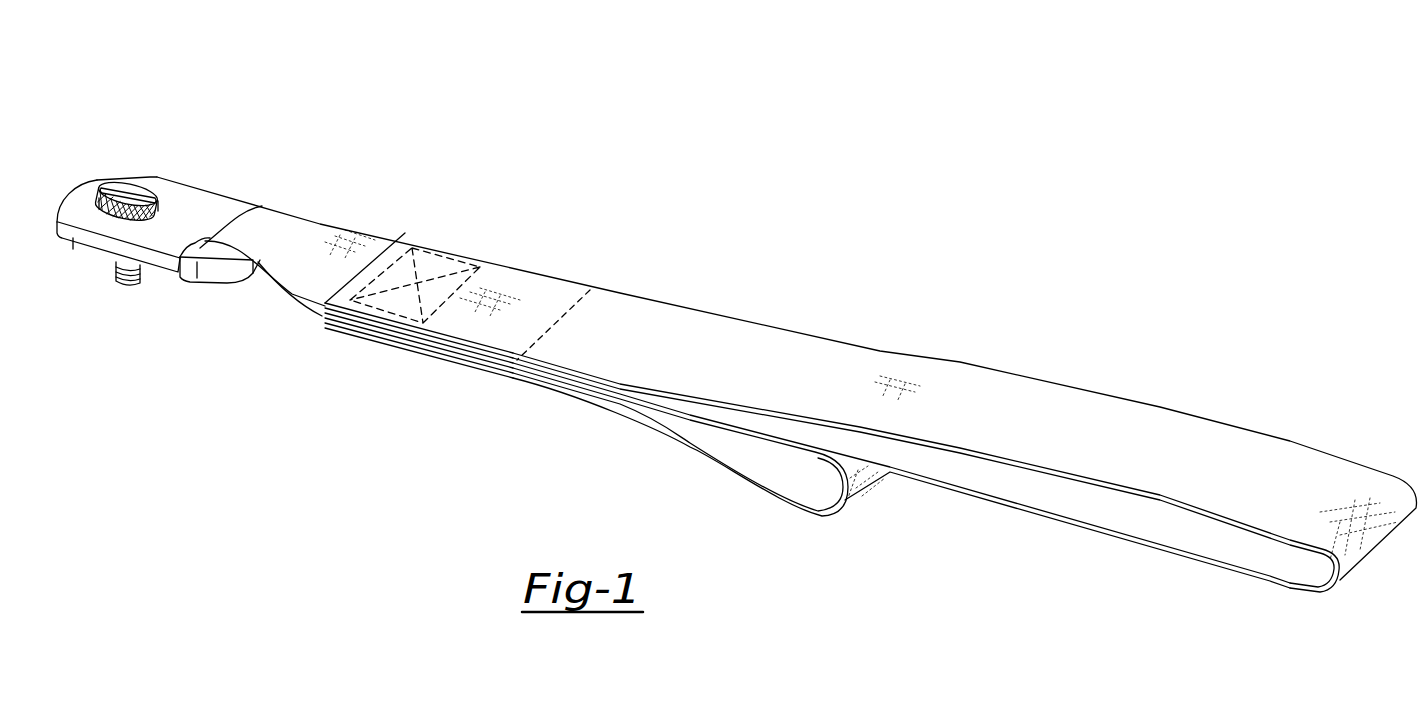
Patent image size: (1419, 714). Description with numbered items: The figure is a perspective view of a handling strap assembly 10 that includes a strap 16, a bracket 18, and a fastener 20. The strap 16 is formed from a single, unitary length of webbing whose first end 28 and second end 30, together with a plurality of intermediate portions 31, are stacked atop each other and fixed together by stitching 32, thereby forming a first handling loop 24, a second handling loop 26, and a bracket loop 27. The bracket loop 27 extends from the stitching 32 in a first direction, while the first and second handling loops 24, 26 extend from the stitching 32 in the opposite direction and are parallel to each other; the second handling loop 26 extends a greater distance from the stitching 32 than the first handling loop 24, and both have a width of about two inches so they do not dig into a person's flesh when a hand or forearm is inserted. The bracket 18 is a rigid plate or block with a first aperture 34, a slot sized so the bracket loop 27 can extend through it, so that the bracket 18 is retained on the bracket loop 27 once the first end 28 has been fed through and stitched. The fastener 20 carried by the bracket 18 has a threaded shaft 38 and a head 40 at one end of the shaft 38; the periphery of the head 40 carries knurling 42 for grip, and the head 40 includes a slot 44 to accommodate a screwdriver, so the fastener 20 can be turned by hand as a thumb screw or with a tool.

The handling strap assembly 10 is at (835, 91).
The strap 16 is at (724, 298).
The bracket 18 is at (187, 200).
The fastener 20 is at (145, 174).
The first handling loop 24 is at (768, 459).
The second handling loop 26 is at (1070, 404).
The bracket loop 27 is at (247, 225).
The first end 28 is at (432, 350).
The second end 30 is at (387, 257).
The intermediate portions 31 is at (365, 329).
The stitching 32 is at (432, 250).
The first aperture 34 is at (181, 273).
The threaded shaft 38 is at (124, 285).
The head 40 is at (100, 204).
The knurling 42 is at (110, 215).
The slot 44 is at (118, 183).